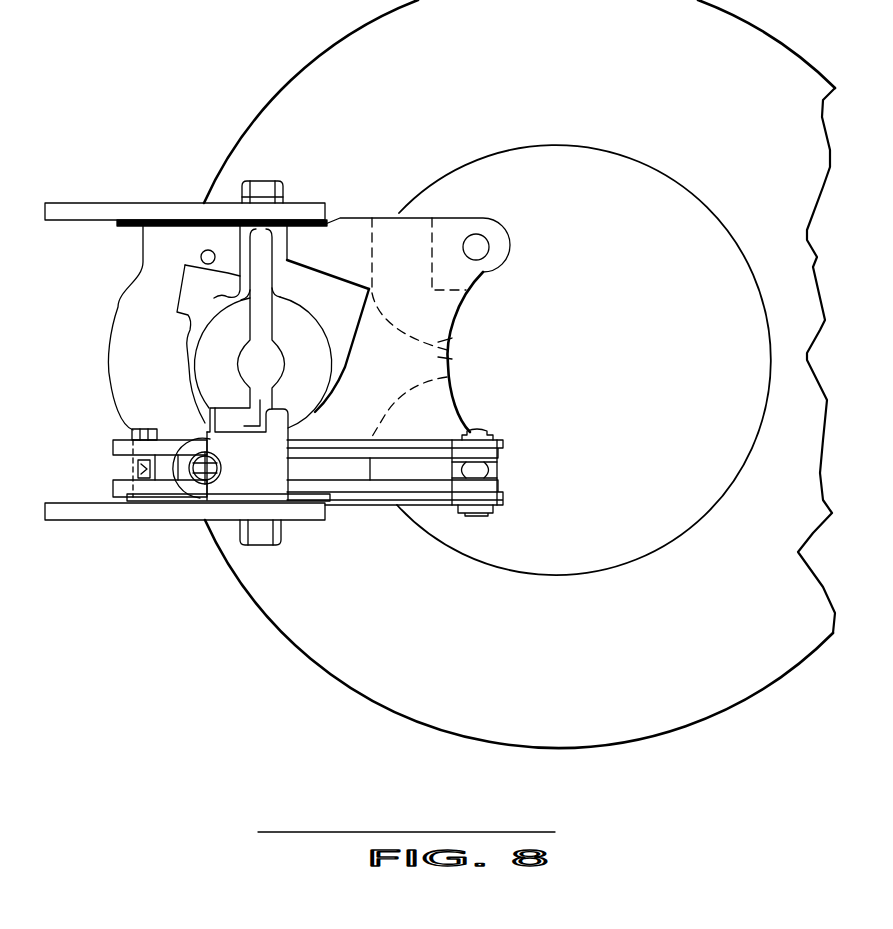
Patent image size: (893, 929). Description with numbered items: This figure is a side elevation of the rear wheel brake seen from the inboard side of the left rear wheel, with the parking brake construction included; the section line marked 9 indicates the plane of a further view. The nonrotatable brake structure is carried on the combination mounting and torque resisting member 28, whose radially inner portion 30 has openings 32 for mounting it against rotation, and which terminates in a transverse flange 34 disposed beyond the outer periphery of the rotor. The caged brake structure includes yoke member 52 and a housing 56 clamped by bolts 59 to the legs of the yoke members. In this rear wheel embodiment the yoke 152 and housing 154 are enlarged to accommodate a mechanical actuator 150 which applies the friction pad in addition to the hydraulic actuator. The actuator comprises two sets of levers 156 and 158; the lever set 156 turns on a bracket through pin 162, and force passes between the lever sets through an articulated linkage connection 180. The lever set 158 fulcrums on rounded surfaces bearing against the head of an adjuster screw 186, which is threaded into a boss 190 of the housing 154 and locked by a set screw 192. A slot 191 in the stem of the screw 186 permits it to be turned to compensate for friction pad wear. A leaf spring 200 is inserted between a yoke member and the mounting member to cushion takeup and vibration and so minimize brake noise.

The section line 9- 9 is at (263, 122).
The torque resisting member 28 is at (443, 353).
The radially inner portion 30 is at (492, 274).
The openings 32 is at (483, 242).
The transverse flange 34 is at (120, 302).
The yoke member 52 is at (66, 205).
The housing 56 is at (182, 340).
The bolts 59 is at (242, 190).
The mechanical actuator 150 is at (493, 418).
The yoke 152 is at (63, 512).
The housing 154 is at (192, 361).
The lever set 156 is at (498, 471).
The lever set 158 is at (503, 441).
The pin 162 is at (480, 511).
The articulated linkage connection 180 is at (136, 427).
The adjuster screw 186 is at (196, 484).
The boss 190 is at (268, 485).
The slot 191 is at (207, 484).
The set screw 192 is at (113, 462).
The leaf spring 200 is at (130, 230).